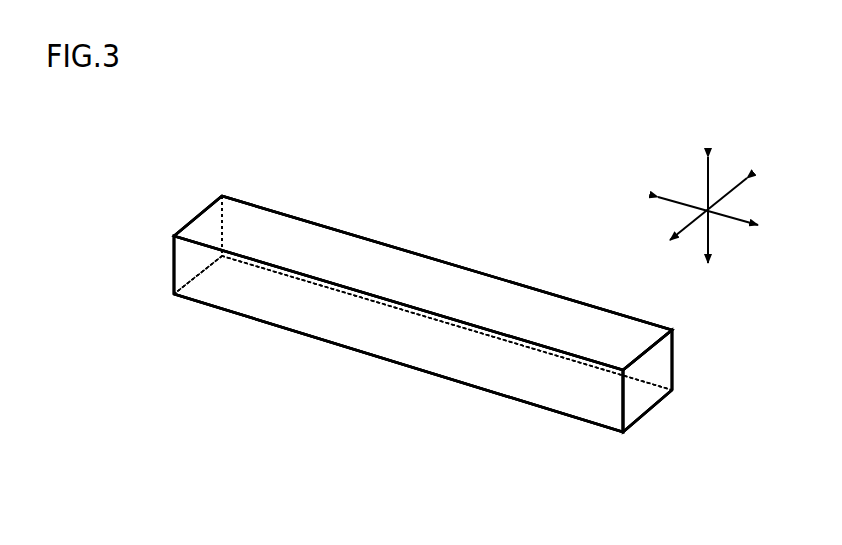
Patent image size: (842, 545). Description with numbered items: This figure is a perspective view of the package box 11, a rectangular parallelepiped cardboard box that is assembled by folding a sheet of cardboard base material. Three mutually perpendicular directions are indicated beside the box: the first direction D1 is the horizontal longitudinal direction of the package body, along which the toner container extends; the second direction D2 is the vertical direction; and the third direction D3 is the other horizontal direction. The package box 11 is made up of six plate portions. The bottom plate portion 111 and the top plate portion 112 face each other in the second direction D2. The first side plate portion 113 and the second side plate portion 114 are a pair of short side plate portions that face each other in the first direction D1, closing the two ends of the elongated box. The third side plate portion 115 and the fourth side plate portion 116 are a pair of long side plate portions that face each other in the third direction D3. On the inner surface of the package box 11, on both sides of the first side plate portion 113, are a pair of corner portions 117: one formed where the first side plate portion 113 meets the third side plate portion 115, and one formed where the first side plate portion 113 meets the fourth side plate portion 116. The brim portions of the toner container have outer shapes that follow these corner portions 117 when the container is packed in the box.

The package box 11 is at (300, 214).
The bottom plate portion 111 is at (302, 318).
The top plate portion 112 is at (387, 262).
The first side plate portion 113 is at (642, 387).
The second side plate portion 114 is at (207, 225).
The third side plate portion 115 is at (415, 345).
The fourth side plate portion 116 is at (548, 312).
The corner portions 117 is at (613, 403).
The first direction D1 is at (735, 214).
The second direction D2 is at (707, 190).
The third direction D3 is at (692, 227).